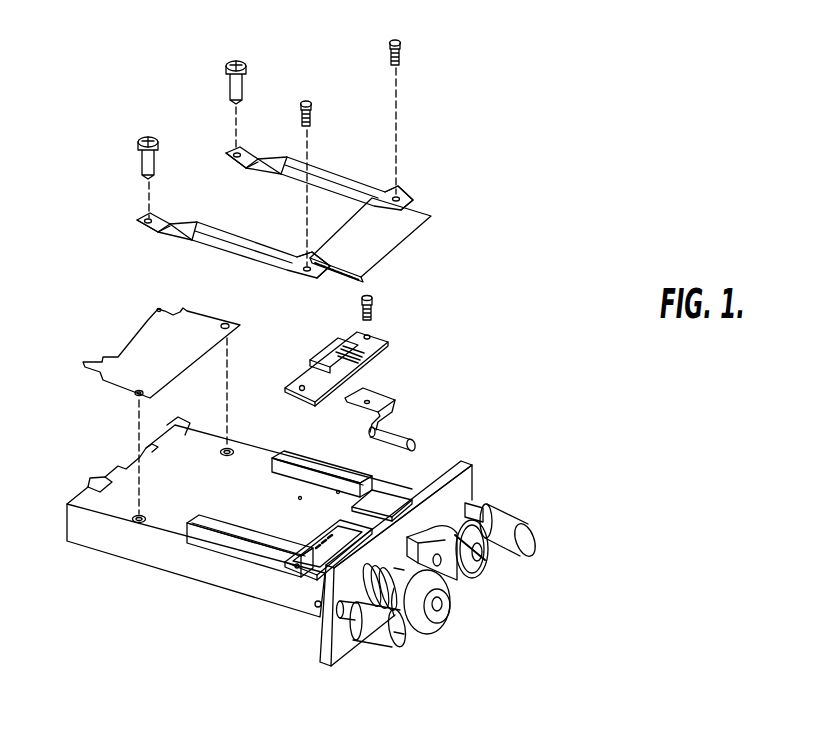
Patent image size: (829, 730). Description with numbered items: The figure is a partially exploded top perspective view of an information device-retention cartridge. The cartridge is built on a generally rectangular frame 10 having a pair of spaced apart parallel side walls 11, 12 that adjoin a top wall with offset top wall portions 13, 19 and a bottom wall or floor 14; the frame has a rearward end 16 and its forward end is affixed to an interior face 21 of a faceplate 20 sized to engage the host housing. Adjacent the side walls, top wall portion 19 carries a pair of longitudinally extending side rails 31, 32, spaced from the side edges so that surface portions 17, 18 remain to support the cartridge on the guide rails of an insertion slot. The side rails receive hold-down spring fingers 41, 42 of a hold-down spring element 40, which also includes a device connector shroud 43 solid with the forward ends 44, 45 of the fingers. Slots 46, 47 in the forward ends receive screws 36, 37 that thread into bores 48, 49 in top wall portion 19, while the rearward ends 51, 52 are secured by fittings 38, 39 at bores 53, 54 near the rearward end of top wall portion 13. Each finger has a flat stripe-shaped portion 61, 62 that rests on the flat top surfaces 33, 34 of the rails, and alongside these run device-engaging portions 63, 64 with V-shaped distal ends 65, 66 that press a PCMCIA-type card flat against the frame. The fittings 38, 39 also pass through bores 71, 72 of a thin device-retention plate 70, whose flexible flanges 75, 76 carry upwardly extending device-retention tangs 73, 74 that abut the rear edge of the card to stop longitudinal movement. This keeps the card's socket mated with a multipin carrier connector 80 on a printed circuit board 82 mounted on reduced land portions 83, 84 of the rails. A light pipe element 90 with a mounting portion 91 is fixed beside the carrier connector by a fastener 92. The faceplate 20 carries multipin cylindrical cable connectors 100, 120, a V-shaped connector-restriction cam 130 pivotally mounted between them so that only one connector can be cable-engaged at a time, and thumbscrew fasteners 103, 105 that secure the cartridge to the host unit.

The frame 10 is at (95, 570).
The side wall 11 is at (72, 525).
The side wall 12 is at (232, 445).
The top wall portion 13 is at (198, 432).
The bottom wall or floor 14 is at (190, 596).
The rearward end 16 is at (70, 498).
The surface portion 17 is at (192, 545).
The surface portion 18 is at (270, 460).
The top wall portion 19 is at (238, 512).
The faceplate 20 is at (492, 465).
The interior face 21 is at (447, 470).
The side rail 31 is at (246, 538).
The side rail 32 is at (320, 462).
The flat top surface 33 is at (250, 548).
The flat top surface 34 is at (345, 480).
The screw 36 is at (302, 98).
The screw 37 is at (385, 42).
The fitting 38 is at (140, 136).
The fitting 39 is at (224, 68).
The hold-down spring element 40 is at (412, 196).
The hold-down spring finger 41 is at (243, 252).
The hold-down spring finger 42 is at (320, 166).
The device connector shroud 43 is at (405, 232).
The forward end 44 is at (320, 276).
The forward end 45 is at (418, 207).
The slot 46 is at (156, 221).
The slot 47 is at (234, 150).
The threaded bore 48 is at (295, 585).
The threaded bore 49 is at (395, 496).
The rearward end 51 is at (143, 225).
The rearward end 52 is at (248, 160).
The bore 53 is at (142, 512).
The bore 54 is at (223, 455).
The stripe-shaped portion 61 is at (256, 258).
The stripe-shaped portion 62 is at (357, 182).
The device-engaging portion 63 is at (237, 233).
The device-engaging portion 64 is at (304, 186).
The V-shaped distal end 65 is at (198, 224).
The V-shaped distal end 66 is at (290, 177).
The device-retention plate 70 is at (128, 328).
The bore 71 is at (136, 398).
The bore 72 is at (228, 322).
The device-retention tang 73 is at (84, 362).
The device-retention tang 74 is at (156, 309).
The flexible flange 75 is at (100, 375).
The flexible flange 76 is at (170, 313).
The multipin carrier connector 80 is at (322, 352).
The carrier connector printed circuit board 82 is at (382, 333).
The reduced land portion 83 is at (293, 560).
The reduced land portion 84 is at (378, 490).
The light pipe element 90 is at (420, 432).
The mounting portion 91 is at (385, 398).
The fastener 92 is at (372, 300).
The multipin cylindrical cable connector 100 is at (478, 488).
The fastener 103 is at (382, 648).
The fastener 105 is at (530, 520).
The multipin cylindrical cable connector 120 is at (438, 636).
The connector-restriction cam 130 is at (480, 562).